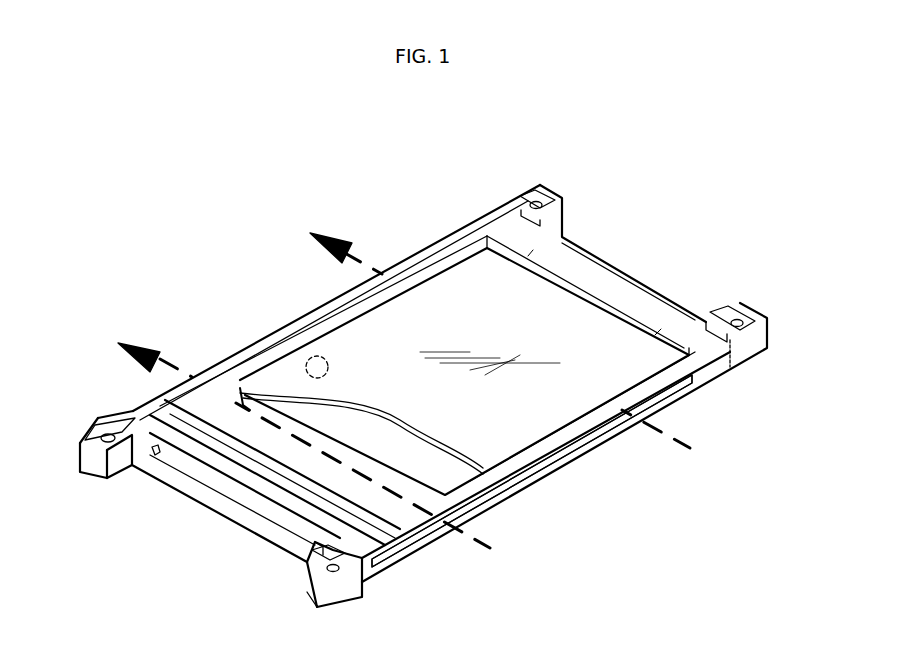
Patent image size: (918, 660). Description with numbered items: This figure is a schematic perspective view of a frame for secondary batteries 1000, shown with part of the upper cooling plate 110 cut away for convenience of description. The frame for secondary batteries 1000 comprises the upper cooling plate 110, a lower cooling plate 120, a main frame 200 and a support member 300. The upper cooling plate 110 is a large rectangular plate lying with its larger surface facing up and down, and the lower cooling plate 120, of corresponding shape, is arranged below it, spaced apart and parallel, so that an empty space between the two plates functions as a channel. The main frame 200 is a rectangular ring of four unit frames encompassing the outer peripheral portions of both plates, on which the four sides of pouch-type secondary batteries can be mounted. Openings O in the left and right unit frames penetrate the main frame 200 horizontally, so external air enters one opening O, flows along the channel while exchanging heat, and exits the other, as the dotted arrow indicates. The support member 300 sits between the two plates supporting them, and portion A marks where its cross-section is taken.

The frame for secondary batteries 1000 is at (462, 160).
The upper cooling plate 110 is at (425, 300).
The lower cooling plate 120 is at (393, 507).
The main frame 200 is at (620, 292).
The support member 300 is at (385, 432).
The portion A is at (308, 356).
The opening O is at (227, 411).